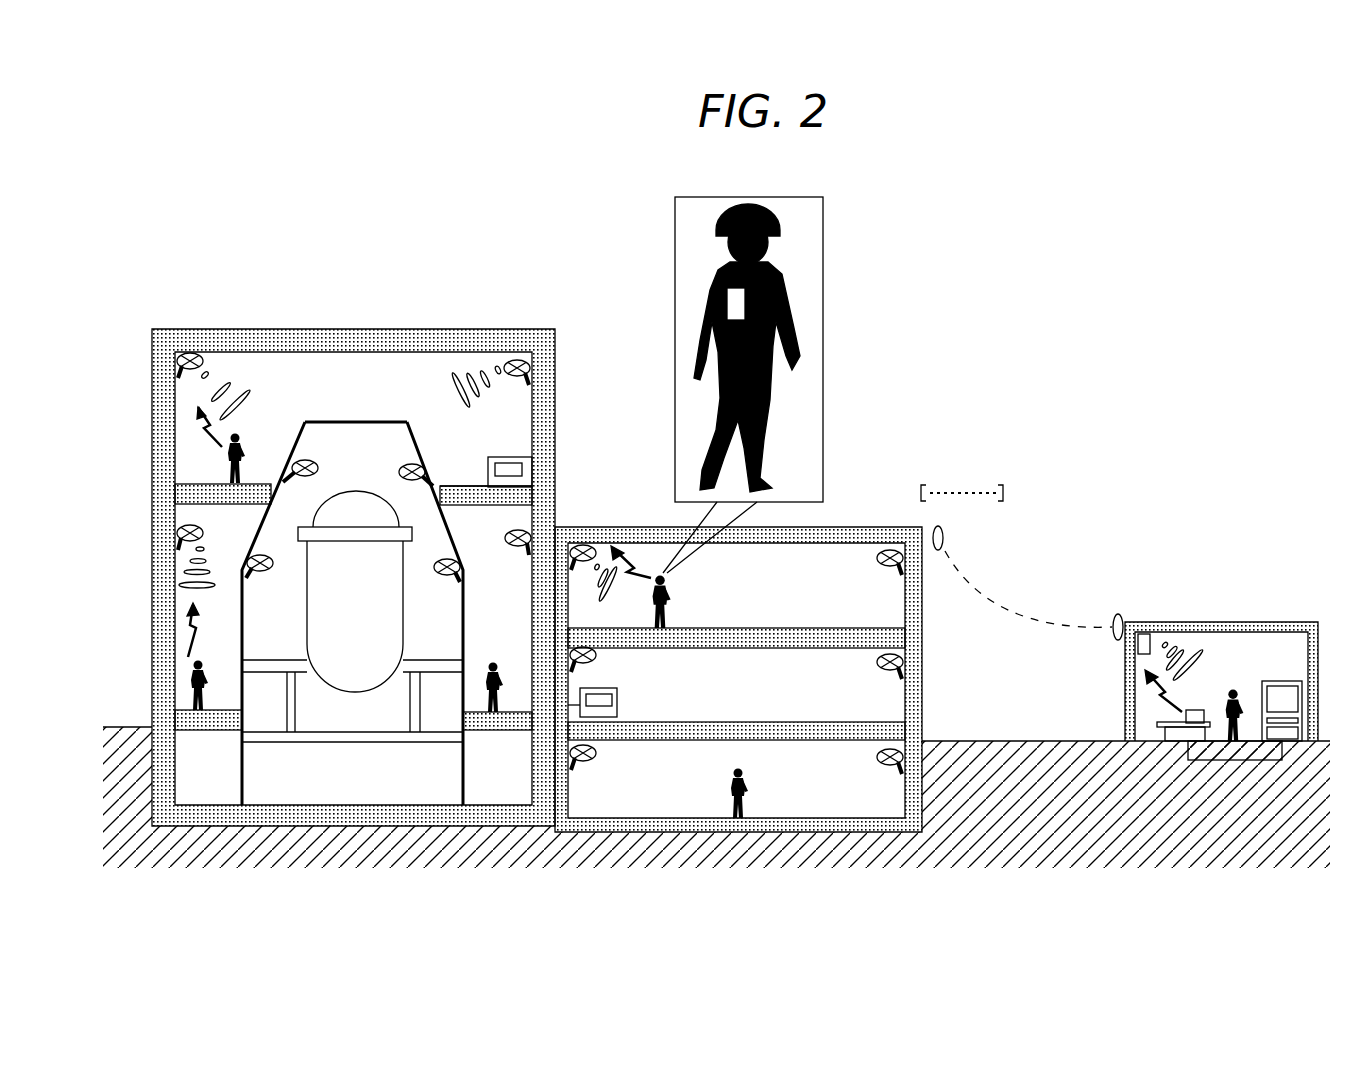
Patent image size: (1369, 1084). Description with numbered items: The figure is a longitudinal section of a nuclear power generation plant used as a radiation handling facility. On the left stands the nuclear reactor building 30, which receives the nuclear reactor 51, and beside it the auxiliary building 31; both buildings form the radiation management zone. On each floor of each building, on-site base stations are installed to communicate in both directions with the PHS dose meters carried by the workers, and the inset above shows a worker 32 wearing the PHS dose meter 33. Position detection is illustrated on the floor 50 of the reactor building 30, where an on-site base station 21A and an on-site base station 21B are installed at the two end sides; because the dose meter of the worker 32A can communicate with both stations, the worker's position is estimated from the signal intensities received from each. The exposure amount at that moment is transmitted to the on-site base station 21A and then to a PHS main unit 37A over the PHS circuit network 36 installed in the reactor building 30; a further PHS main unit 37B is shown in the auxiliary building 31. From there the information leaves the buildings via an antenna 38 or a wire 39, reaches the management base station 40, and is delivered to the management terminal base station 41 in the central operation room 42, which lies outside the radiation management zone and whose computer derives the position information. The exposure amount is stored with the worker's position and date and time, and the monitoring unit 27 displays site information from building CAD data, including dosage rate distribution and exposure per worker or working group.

The on-site base station 21A is at (165, 351).
The on-site base station 21B is at (535, 363).
The monitoring unit 27 is at (1303, 704).
The nuclear reactor building 30 is at (213, 328).
The auxiliary building 31 is at (832, 527).
The worker 32 is at (765, 248).
The worker 32A is at (243, 453).
The PHS dose meter 33 is at (770, 302).
The PHS circuit network 36 is at (893, 527).
The PHS main unit 37A is at (535, 455).
The PHS main unit 37B is at (618, 710).
The antenna 38 is at (948, 540).
The wire 39 is at (1030, 612).
The management base station 40 is at (1120, 648).
The management terminal base station 41 is at (1208, 718).
The central operation room 42 is at (1268, 622).
The floor 50 is at (475, 486).
The nuclear reactor 51 is at (357, 700).